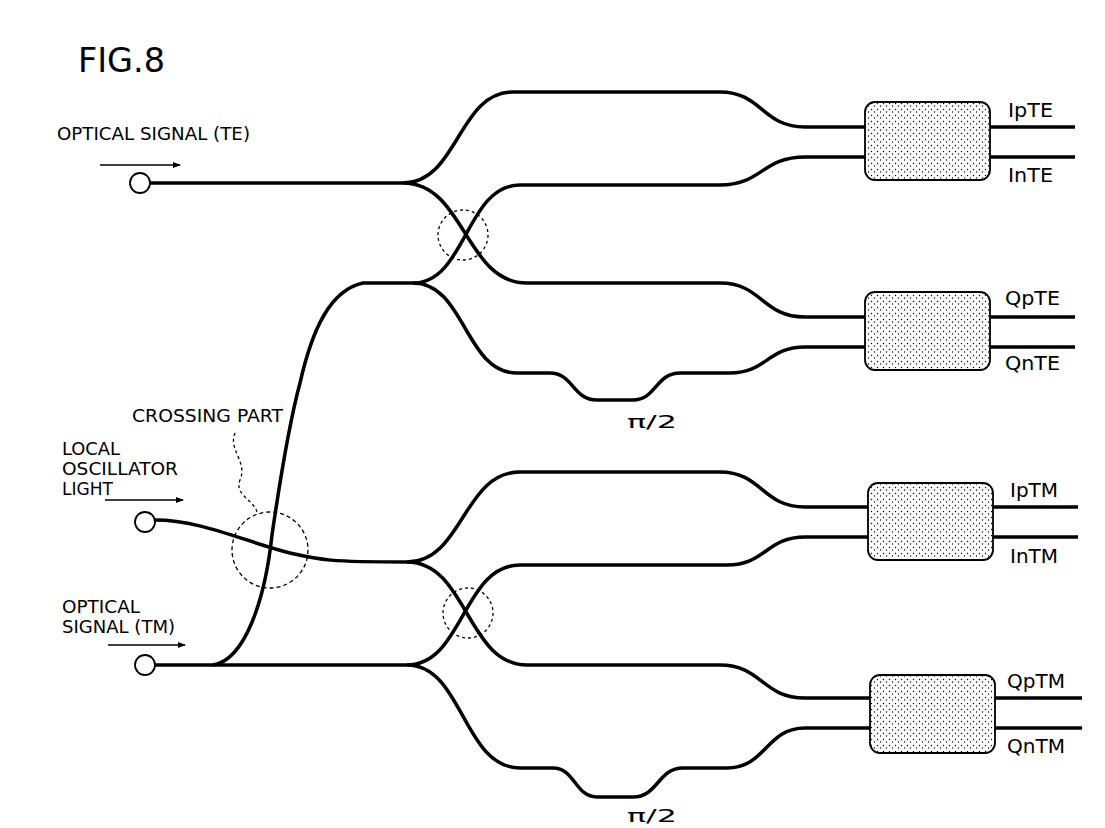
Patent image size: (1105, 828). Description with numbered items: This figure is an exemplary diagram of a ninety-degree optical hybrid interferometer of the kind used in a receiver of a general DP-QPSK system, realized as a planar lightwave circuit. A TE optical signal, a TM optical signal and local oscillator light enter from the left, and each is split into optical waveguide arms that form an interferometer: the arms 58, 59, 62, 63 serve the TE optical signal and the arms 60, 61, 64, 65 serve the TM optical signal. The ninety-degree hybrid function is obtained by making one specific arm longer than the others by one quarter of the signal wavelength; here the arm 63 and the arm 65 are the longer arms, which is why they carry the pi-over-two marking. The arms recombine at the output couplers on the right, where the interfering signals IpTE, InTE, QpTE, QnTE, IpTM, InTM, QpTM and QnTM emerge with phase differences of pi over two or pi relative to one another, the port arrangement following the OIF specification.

The arm 58 is at (627, 92).
The arm 59 is at (627, 281).
The arm 60 is at (723, 470).
The arm 61 is at (723, 663).
The arm 62 is at (627, 183).
The arm 63 is at (552, 371).
The arm 64 is at (635, 563).
The arm 65 is at (535, 767).